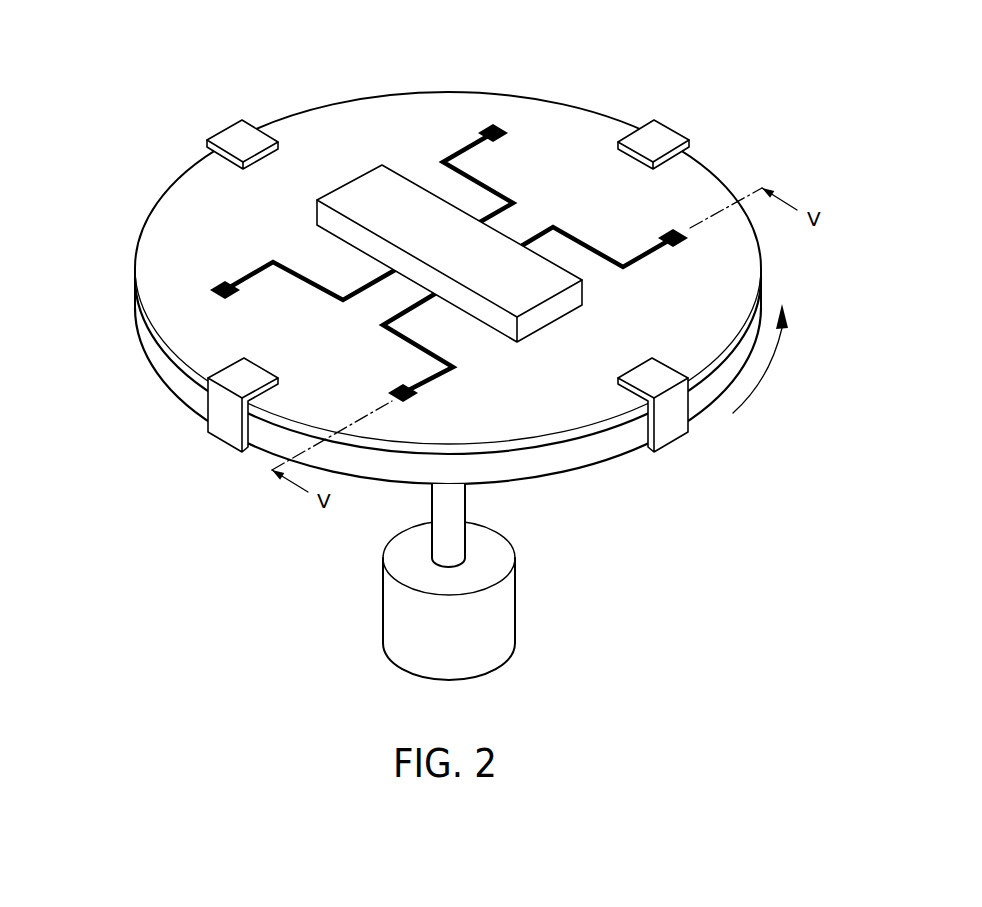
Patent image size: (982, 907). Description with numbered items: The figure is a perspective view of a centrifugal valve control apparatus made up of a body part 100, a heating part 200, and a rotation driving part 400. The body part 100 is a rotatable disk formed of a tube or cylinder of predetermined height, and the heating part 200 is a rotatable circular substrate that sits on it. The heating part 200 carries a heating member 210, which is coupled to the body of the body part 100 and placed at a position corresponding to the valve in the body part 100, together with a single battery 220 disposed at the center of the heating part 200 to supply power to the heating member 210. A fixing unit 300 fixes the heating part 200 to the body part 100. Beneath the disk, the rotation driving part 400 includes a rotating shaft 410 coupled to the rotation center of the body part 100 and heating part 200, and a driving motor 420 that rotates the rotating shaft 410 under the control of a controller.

The body part 100 is at (173, 377).
The heating part 200 is at (163, 340).
The heating member 210 is at (492, 126).
The battery 220 is at (395, 197).
The fixing unit 300 is at (233, 138).
The rotation driving part 400 is at (538, 582).
The rotating shaft 410 is at (457, 512).
The driving motor 420 is at (493, 605).